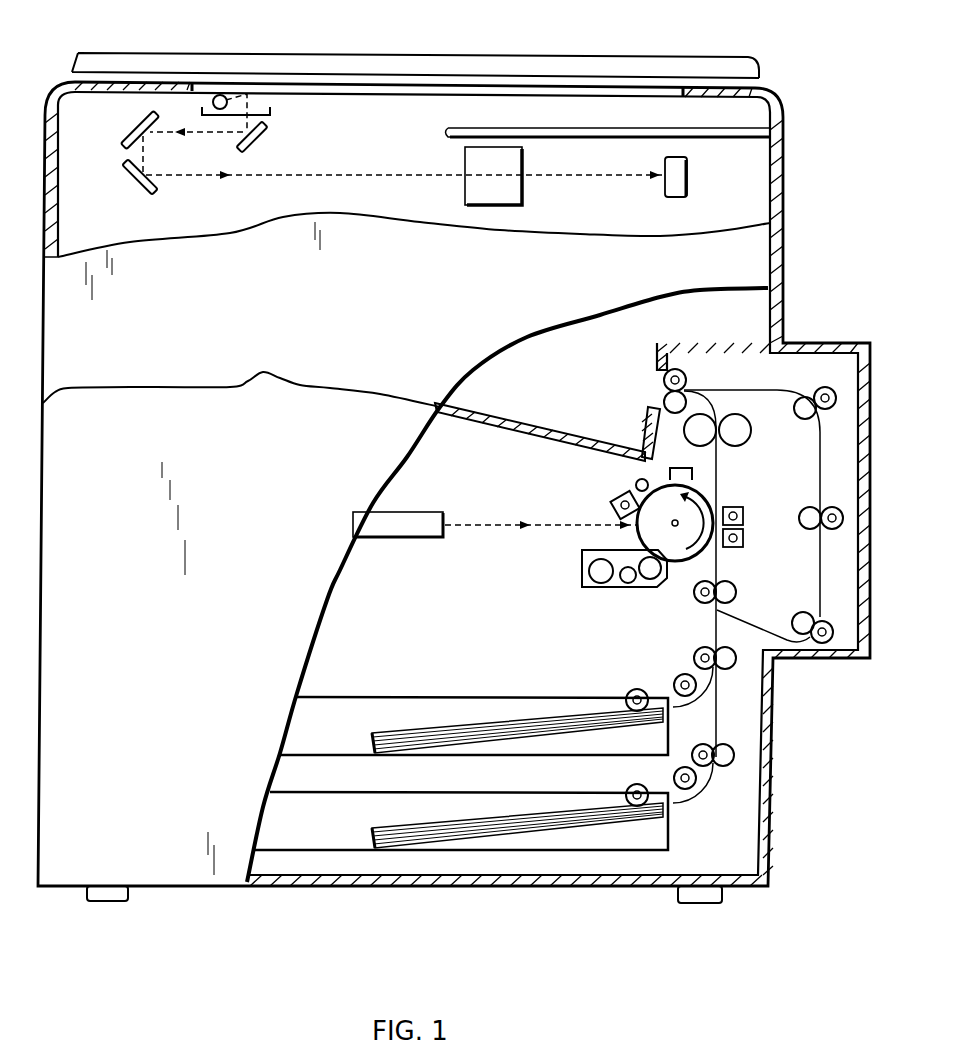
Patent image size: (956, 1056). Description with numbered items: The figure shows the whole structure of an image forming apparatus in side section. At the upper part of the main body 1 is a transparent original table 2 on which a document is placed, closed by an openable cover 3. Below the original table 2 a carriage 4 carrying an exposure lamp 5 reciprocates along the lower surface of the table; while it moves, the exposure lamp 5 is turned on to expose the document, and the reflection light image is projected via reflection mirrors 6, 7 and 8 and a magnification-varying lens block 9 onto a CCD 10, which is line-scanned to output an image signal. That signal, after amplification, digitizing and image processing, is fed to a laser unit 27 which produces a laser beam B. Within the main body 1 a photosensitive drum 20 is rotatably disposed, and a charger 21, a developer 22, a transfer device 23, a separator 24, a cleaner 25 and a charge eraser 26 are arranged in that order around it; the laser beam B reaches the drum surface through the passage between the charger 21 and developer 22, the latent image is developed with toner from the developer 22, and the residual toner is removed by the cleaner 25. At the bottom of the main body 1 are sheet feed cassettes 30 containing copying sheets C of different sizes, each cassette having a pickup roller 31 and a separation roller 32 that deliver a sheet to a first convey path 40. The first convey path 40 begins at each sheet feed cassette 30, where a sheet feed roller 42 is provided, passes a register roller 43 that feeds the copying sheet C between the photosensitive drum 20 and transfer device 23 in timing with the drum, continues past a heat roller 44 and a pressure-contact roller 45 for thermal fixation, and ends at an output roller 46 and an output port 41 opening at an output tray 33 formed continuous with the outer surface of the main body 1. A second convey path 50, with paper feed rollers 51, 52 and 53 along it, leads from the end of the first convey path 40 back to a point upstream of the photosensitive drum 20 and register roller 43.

The main body 1 is at (783, 190).
The original table 2 is at (432, 97).
The cover 3 is at (573, 55).
The carriage 4 is at (270, 112).
The exposure lamp 5 is at (222, 95).
The reflection mirror 6 is at (262, 141).
The reflection mirror 7 is at (126, 128).
The reflection mirror 8 is at (134, 183).
The magnification-varying lens block 9 is at (523, 165).
The CCD 10 is at (688, 175).
The photosensitive drum 20 is at (642, 496).
The charger 21 is at (612, 498).
The developer 22 is at (582, 572).
The transfer device 23 is at (745, 541).
The separator 24 is at (745, 513).
The cleaner 25 is at (678, 467).
The charge eraser 26 is at (637, 479).
The laser unit 27 is at (432, 510).
The sheet feed cassette 30 is at (372, 695).
The pickup roller 31 is at (631, 694).
The separation roller 32 is at (683, 673).
The output tray 33 is at (390, 395).
The first convey path 40 is at (718, 463).
The output port 41 is at (663, 381).
The sheet feed roller 42 is at (700, 648).
The register roller 43 is at (693, 592).
The heat roller 44 is at (645, 420).
The pressure-contact roller 45 is at (752, 432).
The output roller 46 is at (687, 378).
The second convey path 50 is at (784, 390).
The paper feed roller 51 is at (831, 390).
The paper feed roller 52 is at (838, 507).
The paper feed roller 53 is at (826, 622).
The laser beam B is at (528, 513).
The copying sheet C is at (493, 727).